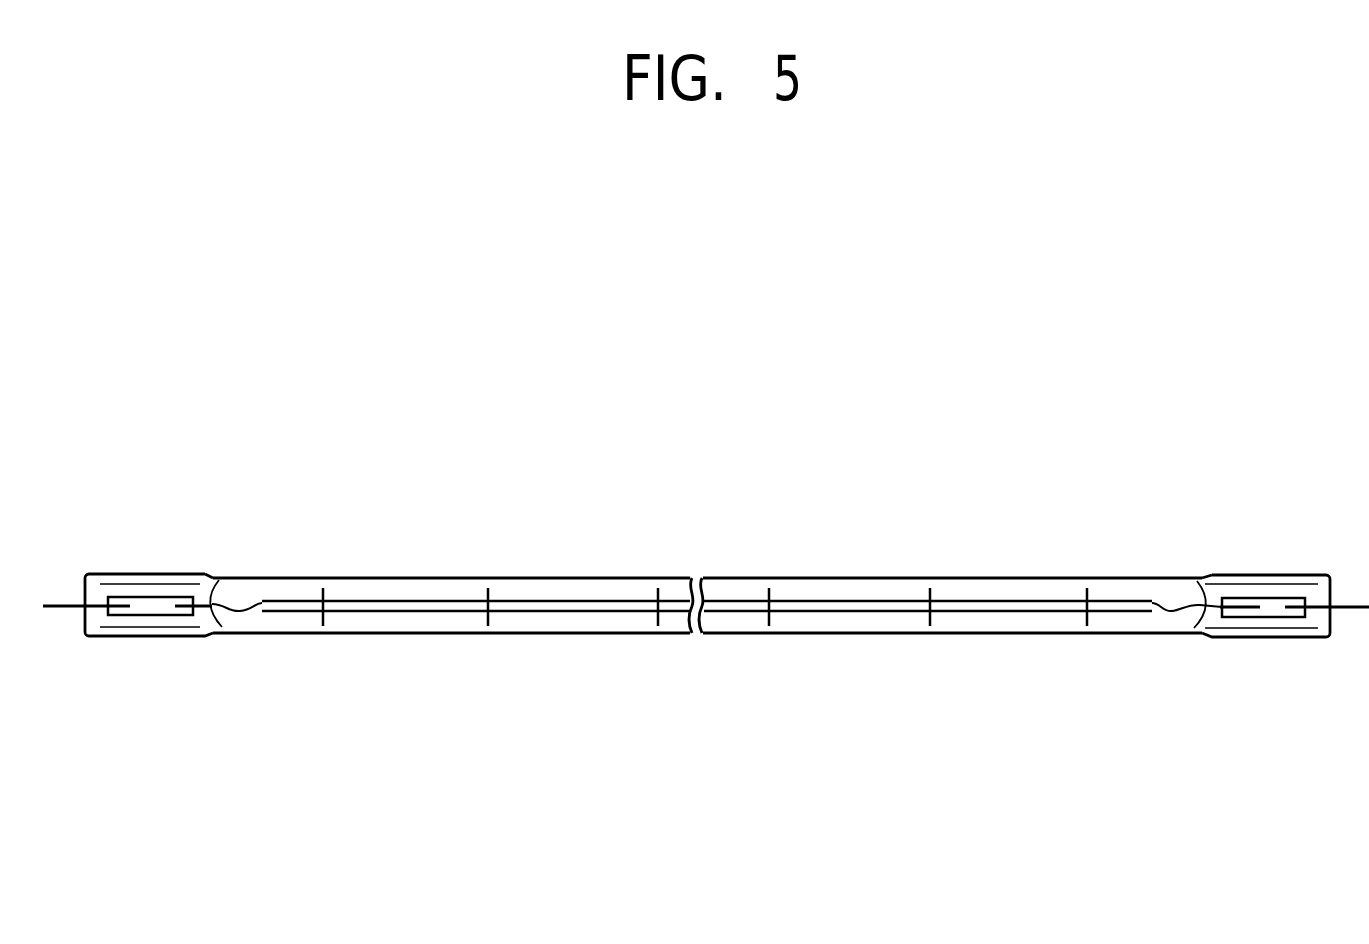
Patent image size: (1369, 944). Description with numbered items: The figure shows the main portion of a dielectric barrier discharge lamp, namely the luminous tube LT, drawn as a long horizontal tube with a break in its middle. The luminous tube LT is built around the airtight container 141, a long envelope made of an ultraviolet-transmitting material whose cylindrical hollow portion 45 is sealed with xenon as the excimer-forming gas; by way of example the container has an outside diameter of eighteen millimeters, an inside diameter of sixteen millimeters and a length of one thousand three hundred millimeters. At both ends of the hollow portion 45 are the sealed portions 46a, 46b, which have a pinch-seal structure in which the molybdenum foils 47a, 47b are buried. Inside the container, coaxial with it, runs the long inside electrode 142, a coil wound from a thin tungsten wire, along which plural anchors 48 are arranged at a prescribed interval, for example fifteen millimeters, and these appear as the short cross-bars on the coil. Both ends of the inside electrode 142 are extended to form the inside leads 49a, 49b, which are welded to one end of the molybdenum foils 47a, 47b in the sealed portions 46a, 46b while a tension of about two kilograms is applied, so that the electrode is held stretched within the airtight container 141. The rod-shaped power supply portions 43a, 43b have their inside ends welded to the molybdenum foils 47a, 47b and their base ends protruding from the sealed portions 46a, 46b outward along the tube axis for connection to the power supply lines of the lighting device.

The airtight container 141 is at (543, 577).
The inside electrode 142 is at (595, 612).
The hollow portion 45 is at (738, 623).
The anchors 48 is at (930, 626).
The luminous tube LT is at (768, 555).
The sealed portion 46a is at (149, 582).
The sealed portion 46b is at (1268, 582).
The molybdenum foil 47a is at (147, 612).
The molybdenum foil 47b is at (1258, 616).
The power supply portion 43a is at (74, 605).
The power supply portion 43b is at (1344, 603).
The inside lead 49a is at (240, 608).
The inside lead 49b is at (1172, 610).